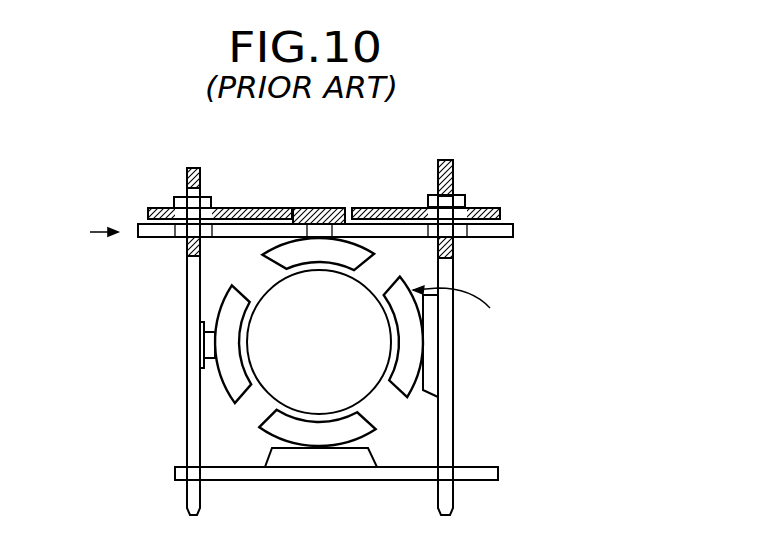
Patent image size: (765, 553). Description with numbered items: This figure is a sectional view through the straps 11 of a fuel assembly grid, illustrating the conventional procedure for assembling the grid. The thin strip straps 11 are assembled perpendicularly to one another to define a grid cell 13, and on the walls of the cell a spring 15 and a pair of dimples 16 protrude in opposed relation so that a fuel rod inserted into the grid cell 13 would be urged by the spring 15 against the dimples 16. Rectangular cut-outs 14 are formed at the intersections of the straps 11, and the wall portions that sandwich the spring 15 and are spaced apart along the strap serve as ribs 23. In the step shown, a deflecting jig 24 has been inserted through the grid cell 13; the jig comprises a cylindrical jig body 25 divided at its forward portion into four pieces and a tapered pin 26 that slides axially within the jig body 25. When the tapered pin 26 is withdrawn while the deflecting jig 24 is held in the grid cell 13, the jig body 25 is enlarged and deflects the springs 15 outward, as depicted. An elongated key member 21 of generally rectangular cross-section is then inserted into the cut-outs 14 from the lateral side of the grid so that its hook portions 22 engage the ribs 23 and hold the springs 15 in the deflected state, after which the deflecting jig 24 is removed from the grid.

The strap 11 is at (188, 387).
The grid cell 13 is at (428, 433).
The cut-out 14 is at (198, 187).
The spring 15 is at (318, 208).
The dimple 16 is at (428, 353).
The key member 21 is at (505, 237).
The hook portion 22 is at (182, 197).
The rib 23 is at (257, 208).
The deflecting jig 24 is at (471, 313).
The jig body 25 is at (285, 263).
The tapered pin 26 is at (280, 373).